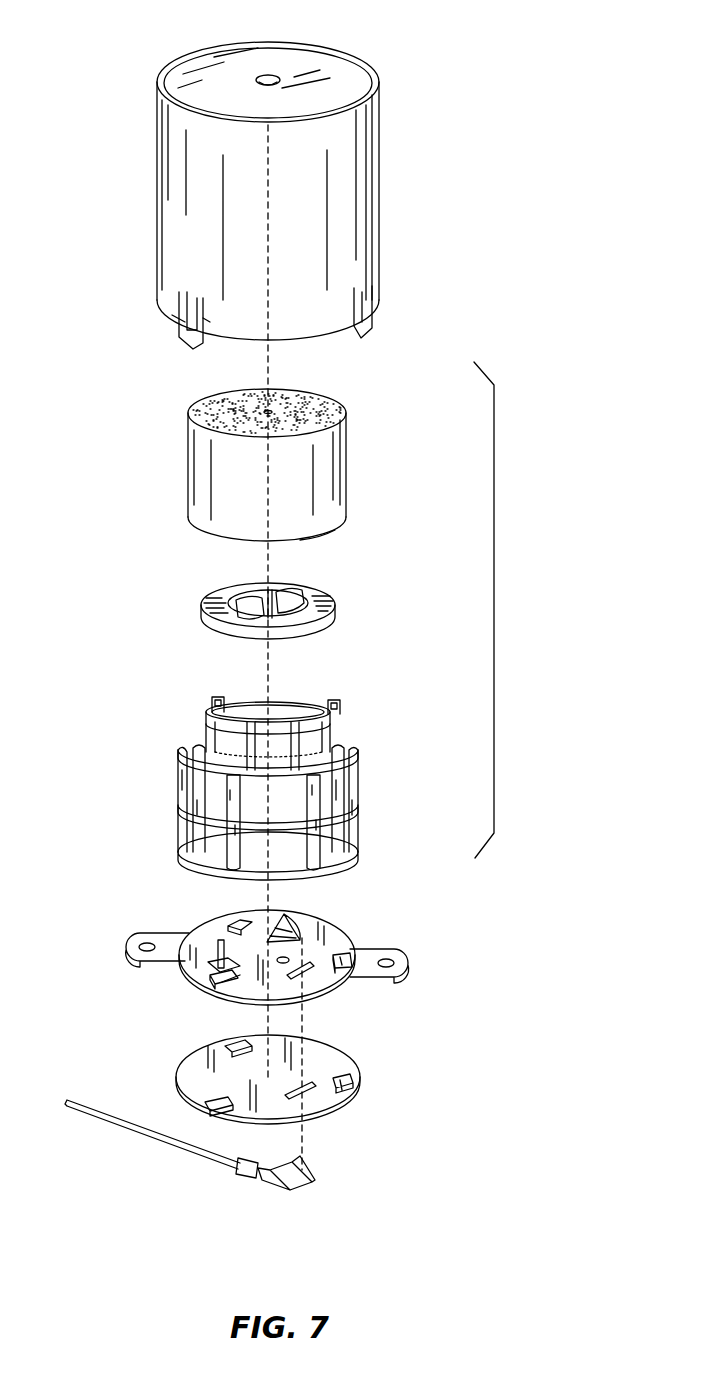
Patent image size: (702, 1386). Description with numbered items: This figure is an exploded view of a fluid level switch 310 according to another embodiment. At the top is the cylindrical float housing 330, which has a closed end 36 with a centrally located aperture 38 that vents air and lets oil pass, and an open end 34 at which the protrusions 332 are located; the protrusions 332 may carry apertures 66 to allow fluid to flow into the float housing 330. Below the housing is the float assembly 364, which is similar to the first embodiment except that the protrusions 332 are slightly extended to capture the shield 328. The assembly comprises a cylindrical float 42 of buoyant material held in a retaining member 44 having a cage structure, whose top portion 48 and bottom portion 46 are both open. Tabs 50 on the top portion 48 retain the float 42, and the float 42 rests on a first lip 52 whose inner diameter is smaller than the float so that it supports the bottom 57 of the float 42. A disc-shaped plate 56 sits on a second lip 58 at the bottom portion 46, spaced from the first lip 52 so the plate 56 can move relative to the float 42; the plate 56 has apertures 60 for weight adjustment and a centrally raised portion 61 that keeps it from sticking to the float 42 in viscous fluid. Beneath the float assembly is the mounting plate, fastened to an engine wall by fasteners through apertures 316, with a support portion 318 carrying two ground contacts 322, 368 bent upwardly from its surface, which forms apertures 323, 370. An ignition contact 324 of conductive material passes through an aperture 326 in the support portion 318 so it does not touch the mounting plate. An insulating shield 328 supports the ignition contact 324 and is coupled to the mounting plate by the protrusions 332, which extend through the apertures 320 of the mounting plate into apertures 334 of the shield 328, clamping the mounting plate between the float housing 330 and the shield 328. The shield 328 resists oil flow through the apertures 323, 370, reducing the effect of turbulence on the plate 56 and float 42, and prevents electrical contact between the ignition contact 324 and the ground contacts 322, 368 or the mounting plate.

The fluid level switch 310 is at (526, 168).
The float housing 330 is at (336, 230).
The closed end 36 is at (352, 77).
The aperture 38 is at (273, 74).
The protrusions 332 is at (178, 330).
The apertures 66 is at (180, 316).
The open end 34 is at (222, 335).
The float 42 is at (325, 453).
The first lip 52 is at (325, 400).
The bottom of the float 57 is at (325, 533).
The plate 56 is at (305, 588).
The apertures 60 is at (292, 592).
The raised portion 61 is at (206, 614).
The top portion 48 is at (310, 692).
The retaining member 44 is at (375, 792).
The tabs 50 is at (218, 698).
The second lip 58 is at (346, 842).
The bottom portion 46 is at (340, 870).
The float assembly 364 is at (494, 610).
The support portion 318 is at (348, 935).
The apertures 316 is at (147, 943).
The apertures 320 is at (236, 922).
The electrical contact 322 is at (300, 937).
The electrical contact 368 is at (205, 968).
The aperture 326 is at (340, 975).
The aperture 323 is at (283, 950).
The aperture 370 is at (243, 977).
The shield 328 is at (310, 1105).
The apertures 334 is at (343, 1076).
The electrical contact 324 is at (312, 1167).